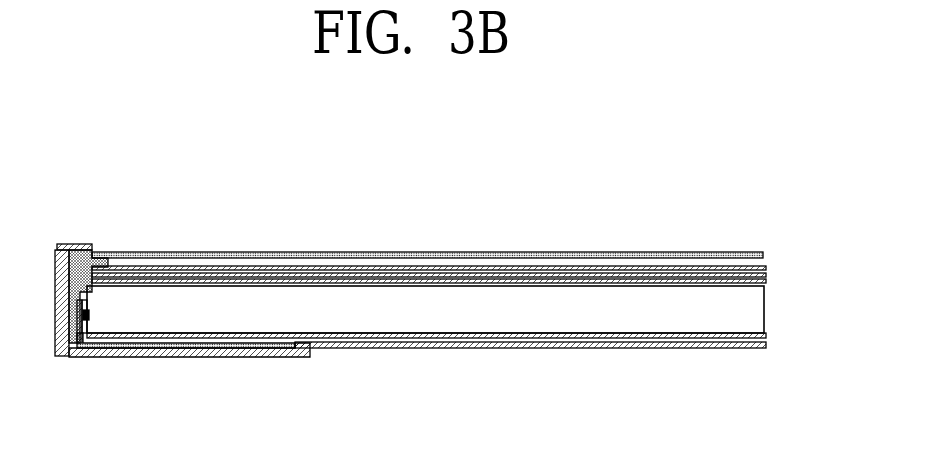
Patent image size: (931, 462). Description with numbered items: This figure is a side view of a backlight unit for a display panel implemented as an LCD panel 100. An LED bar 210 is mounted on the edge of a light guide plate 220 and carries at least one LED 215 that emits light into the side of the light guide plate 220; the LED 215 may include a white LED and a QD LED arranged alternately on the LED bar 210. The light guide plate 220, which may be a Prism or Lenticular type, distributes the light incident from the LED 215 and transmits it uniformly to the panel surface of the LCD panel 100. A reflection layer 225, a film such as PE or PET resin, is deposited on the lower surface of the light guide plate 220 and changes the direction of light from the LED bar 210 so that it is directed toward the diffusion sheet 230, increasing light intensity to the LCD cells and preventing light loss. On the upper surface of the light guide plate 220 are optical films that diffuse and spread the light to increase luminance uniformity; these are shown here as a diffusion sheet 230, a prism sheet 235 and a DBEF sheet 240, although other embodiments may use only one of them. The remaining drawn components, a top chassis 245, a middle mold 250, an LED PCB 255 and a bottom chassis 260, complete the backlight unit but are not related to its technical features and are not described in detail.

The LCD panel 100 is at (543, 255).
The LED bar 210 is at (85, 341).
The LED 215 is at (90, 317).
The light guide plate 220 is at (377, 325).
The reflection layer 225 is at (678, 340).
The diffusion sheet 230 is at (675, 283).
The prism sheet 235 is at (633, 277).
The DBEF sheet 240 is at (587, 268).
The top chassis 245 is at (60, 355).
The middle mold 250 is at (81, 338).
The LED PCB 255 is at (177, 348).
The bottom chassis 260 is at (247, 357).